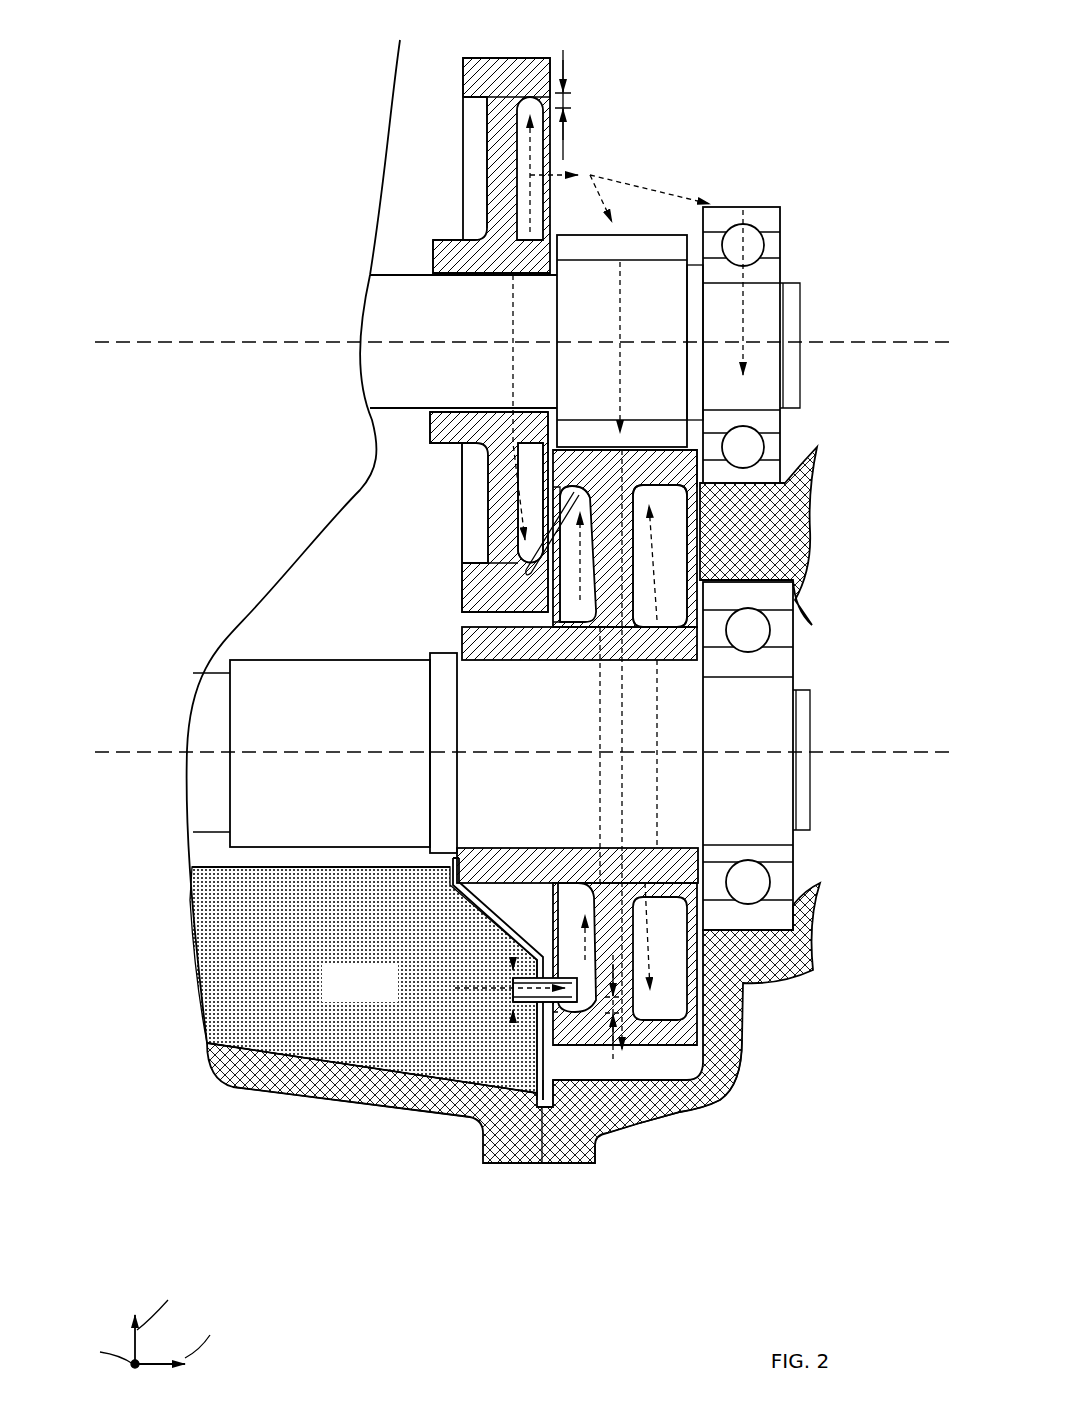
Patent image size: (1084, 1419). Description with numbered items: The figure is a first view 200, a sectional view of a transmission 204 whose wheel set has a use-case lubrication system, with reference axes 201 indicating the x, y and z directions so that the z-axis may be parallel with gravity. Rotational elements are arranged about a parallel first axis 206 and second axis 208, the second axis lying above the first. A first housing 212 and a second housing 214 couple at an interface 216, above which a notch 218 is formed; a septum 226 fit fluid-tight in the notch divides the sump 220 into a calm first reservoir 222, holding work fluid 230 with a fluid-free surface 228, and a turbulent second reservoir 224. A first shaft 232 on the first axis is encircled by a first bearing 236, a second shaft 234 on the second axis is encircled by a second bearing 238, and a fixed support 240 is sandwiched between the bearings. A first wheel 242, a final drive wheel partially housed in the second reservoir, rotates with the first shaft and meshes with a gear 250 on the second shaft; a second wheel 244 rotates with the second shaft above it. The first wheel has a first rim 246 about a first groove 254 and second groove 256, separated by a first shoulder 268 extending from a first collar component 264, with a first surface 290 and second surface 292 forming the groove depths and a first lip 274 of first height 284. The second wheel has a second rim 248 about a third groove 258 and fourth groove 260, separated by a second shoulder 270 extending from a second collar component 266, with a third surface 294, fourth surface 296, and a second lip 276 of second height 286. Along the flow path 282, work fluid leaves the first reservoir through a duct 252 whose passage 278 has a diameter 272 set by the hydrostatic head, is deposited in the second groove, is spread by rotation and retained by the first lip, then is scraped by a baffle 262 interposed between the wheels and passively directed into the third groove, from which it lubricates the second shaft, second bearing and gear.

The first view 200 is at (198, 122).
The reference axes 201 is at (118, 1300).
The transmission 204 is at (807, 95).
The first axis 206 is at (878, 760).
The second axis 208 is at (230, 340).
The first housing 212 is at (330, 1088).
The second housing 214 is at (707, 1100).
The interface 216 is at (545, 1000).
The notch 218 is at (564, 1092).
The sump 220 is at (298, 855).
The first reservoir 222 is at (403, 1033).
The second reservoir 224 is at (590, 1130).
The septum 226 is at (478, 922).
The fluid-free surface 228 is at (230, 867).
The work fluid 230 is at (363, 980).
The first shaft 232 is at (300, 690).
The second shaft 234 is at (400, 313).
The first bearing 236 is at (773, 673).
The second bearing 238 is at (735, 208).
The fixed support 240 is at (793, 470).
The first wheel 242 is at (690, 965).
The second wheel 244 is at (460, 155).
The first rim 246 is at (655, 1030).
The second rim 248 is at (510, 88).
The gear 250 is at (655, 235).
The duct 252 is at (540, 1003).
The first groove 254 is at (670, 577).
The second groove 256 is at (573, 590).
The third groove 258 is at (528, 447).
The fourth groove 260 is at (495, 497).
The baffle 262 is at (480, 507).
The first collar component 264 is at (500, 645).
The second collar component 266 is at (460, 262).
The first shoulder 268 is at (627, 550).
The second shoulder 270 is at (475, 452).
The diameter 272 is at (515, 1010).
The first lip 274 is at (558, 490).
The second lip 276 is at (545, 530).
The passage 278 is at (527, 1005).
The flow path 282 is at (590, 740).
The first height 284 is at (628, 1070).
The second height 286 is at (564, 88).
The first surface 290 is at (668, 478).
The second surface 292 is at (570, 492).
The third surface 294 is at (550, 566).
The fourth surface 296 is at (487, 100).